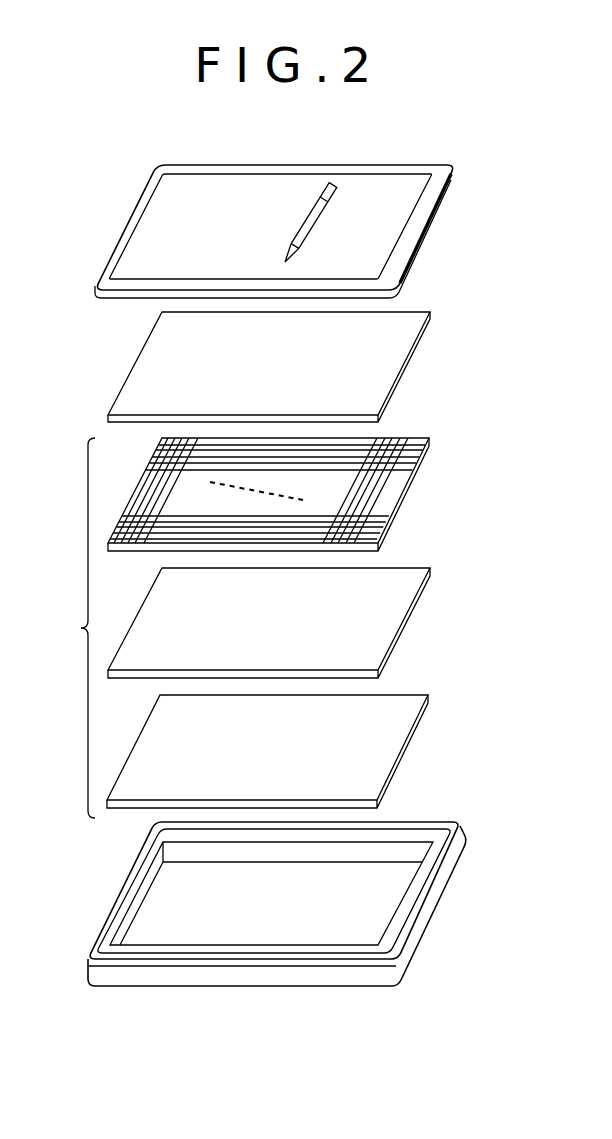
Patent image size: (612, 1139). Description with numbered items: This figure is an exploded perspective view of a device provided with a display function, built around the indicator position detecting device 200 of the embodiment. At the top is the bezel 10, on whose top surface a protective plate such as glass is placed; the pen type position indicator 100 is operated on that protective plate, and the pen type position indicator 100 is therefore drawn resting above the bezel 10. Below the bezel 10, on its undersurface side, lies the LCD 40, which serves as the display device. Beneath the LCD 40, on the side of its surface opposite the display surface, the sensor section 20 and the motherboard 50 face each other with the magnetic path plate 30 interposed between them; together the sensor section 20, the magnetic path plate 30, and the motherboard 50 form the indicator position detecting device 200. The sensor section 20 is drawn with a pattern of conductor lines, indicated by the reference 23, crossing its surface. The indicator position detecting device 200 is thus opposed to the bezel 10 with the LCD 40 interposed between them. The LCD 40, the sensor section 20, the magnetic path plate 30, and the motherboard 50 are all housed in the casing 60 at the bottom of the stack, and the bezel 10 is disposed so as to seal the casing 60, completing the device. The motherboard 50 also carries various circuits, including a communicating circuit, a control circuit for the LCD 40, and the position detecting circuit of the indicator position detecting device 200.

The bezel 10 is at (433, 230).
The pen type position indicator 100 is at (307, 222).
The LCD 40 is at (418, 348).
The sensor section 20 is at (286, 494).
The electrode wiring / loop coils 23 is at (392, 525).
The magnetic path plate 30 is at (417, 607).
The motherboard 50 is at (413, 742).
The indicator position detecting device 200 is at (65, 628).
The casing 60 is at (437, 900).